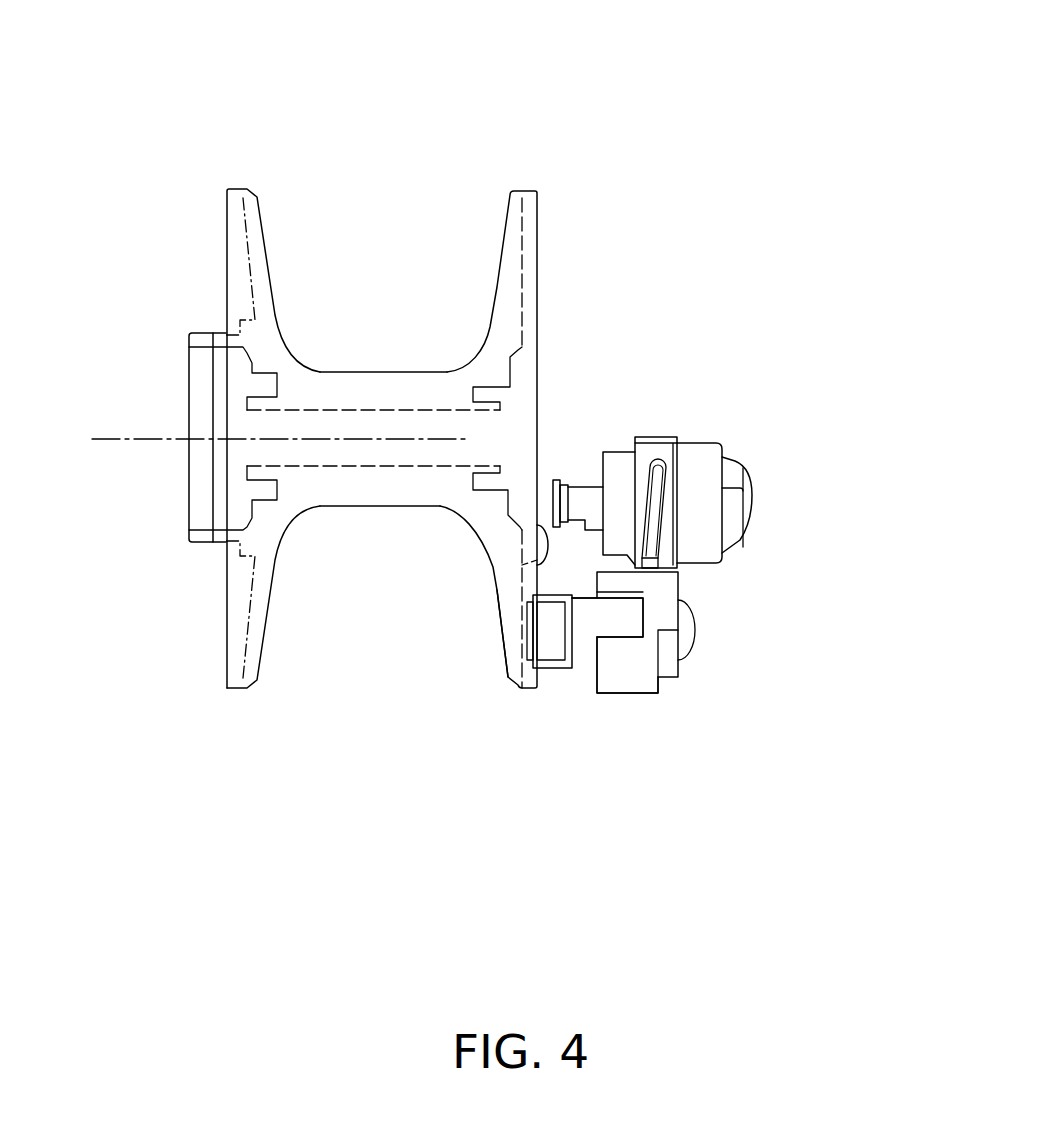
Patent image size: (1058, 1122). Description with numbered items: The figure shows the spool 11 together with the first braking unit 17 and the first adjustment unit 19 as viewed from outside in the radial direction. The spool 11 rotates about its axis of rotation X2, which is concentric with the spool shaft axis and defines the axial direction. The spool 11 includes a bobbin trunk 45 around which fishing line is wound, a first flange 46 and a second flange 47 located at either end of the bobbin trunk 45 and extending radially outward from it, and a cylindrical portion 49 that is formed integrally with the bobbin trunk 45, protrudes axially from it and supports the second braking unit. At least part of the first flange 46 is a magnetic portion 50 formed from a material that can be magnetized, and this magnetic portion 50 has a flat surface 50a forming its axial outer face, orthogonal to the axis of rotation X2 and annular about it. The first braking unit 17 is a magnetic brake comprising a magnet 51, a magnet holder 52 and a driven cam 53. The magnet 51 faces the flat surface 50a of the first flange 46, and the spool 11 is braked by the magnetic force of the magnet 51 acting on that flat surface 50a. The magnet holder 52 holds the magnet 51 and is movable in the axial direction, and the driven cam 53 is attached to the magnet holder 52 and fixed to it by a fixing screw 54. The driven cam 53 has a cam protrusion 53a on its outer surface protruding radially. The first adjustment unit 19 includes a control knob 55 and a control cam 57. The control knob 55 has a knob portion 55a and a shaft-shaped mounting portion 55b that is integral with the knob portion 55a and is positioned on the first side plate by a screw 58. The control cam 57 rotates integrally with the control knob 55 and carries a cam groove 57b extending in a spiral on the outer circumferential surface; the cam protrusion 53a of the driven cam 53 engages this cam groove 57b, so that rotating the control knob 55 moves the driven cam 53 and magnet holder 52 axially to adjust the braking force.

The spool 11 is at (407, 118).
The axis of rotation X2 is at (260, 441).
The bobbin trunk 45 is at (366, 368).
The first flange 46 is at (527, 182).
The second flange 47 is at (245, 183).
The cylindrical portion 49 is at (203, 338).
The magnetic portion 50 is at (507, 587).
The flat surface 50a is at (537, 527).
The magnet 51 is at (553, 648).
The magnet holder 52 is at (583, 637).
The driven cam 53 is at (630, 677).
The cam protrusion 53a is at (648, 568).
The fixing screw 54 is at (695, 637).
The control knob 55 is at (705, 438).
The knob portion 55a is at (732, 473).
The mounting portion 55b is at (582, 500).
The control cam 57 is at (662, 437).
The cam groove 57b is at (657, 517).
The screw 58 is at (558, 478).
The first braking unit 17 is at (690, 692).
The first adjustment unit 19 is at (768, 505).